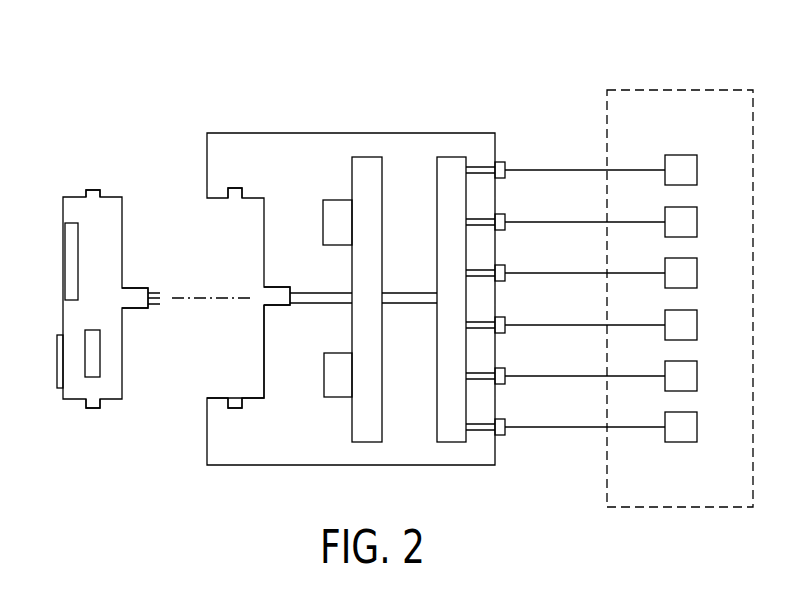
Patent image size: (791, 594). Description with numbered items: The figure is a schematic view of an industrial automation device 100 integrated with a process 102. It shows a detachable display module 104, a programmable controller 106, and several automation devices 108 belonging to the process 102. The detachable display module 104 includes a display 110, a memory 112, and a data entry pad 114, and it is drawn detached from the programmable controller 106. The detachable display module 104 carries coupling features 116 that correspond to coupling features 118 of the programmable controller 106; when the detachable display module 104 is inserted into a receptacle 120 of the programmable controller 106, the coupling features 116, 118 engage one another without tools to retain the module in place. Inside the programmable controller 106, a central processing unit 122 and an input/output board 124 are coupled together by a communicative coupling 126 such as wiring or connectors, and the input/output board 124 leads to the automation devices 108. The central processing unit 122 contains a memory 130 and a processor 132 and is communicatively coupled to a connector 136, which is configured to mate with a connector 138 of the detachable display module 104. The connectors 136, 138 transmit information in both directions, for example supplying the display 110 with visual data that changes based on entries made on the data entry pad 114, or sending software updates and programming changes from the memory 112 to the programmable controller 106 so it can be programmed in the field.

The industrial automation device 100 is at (155, 100).
The process 102 is at (683, 90).
The detachable display module 104 is at (122, 223).
The programmable controller 106 is at (349, 133).
The automation devices 108 is at (697, 170).
The display 110 is at (63, 262).
The memory 112 is at (100, 353).
The data entry pad 114 is at (57, 362).
The coupling features 116 is at (92, 190).
The coupling features 118 is at (235, 188).
The receptacle 120 is at (215, 387).
The central processing unit 122 is at (382, 190).
The input/output board 124 is at (437, 205).
The communicative coupling 126 is at (406, 305).
The memory 130 is at (323, 220).
The processor 132 is at (324, 376).
The connector 136 is at (268, 295).
The connector 138 is at (140, 288).